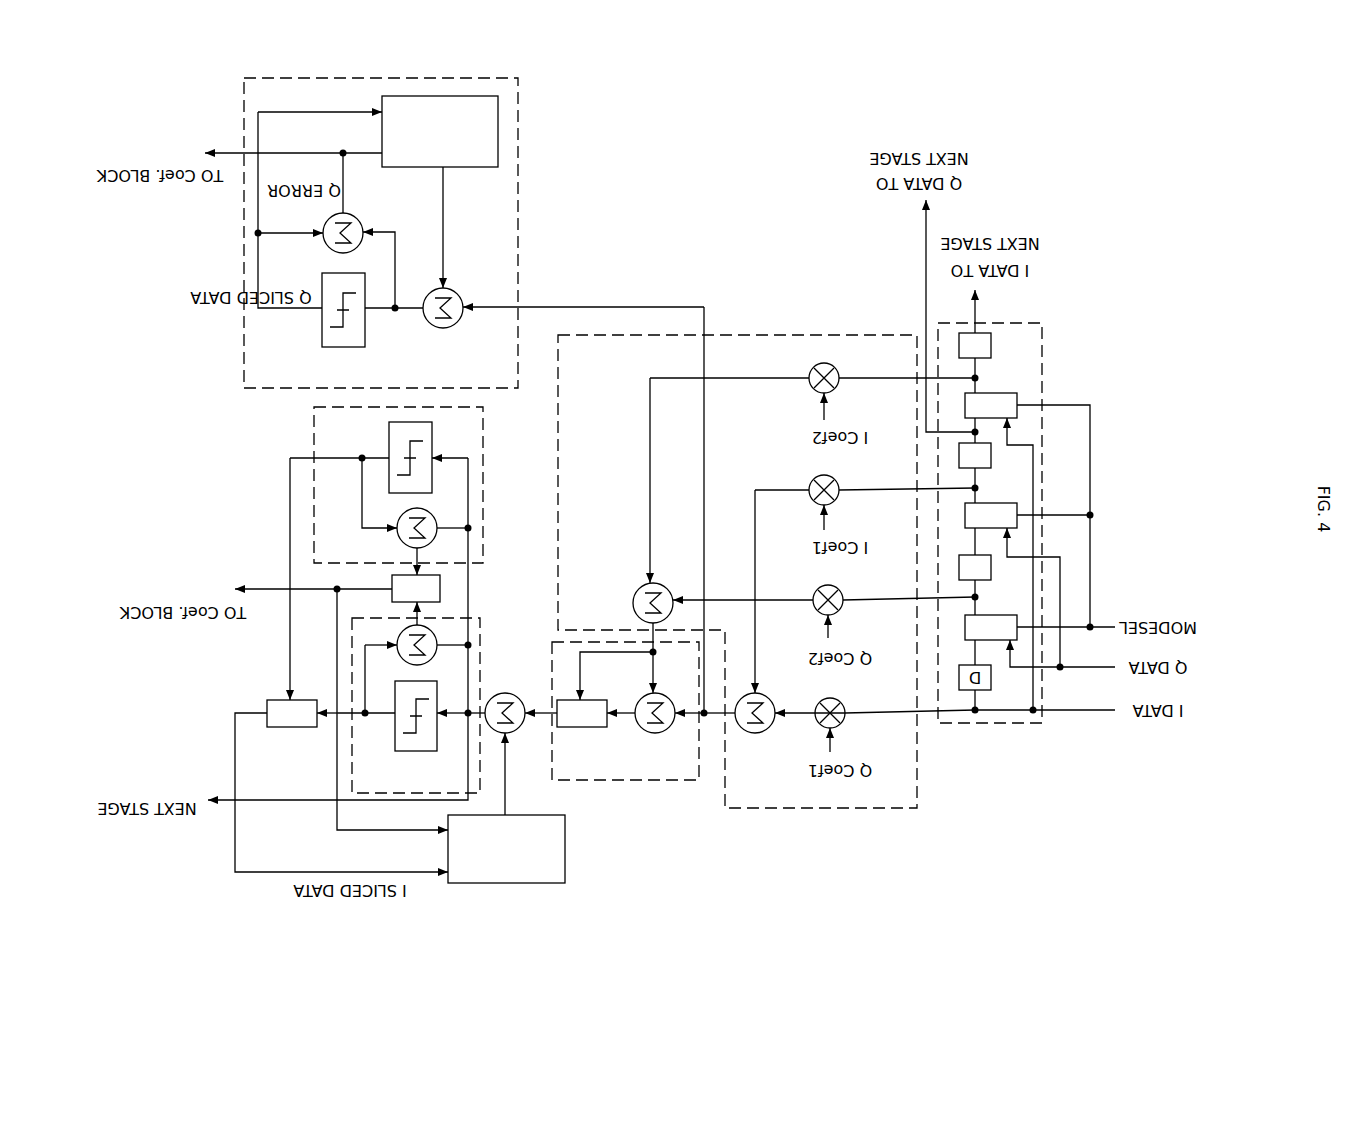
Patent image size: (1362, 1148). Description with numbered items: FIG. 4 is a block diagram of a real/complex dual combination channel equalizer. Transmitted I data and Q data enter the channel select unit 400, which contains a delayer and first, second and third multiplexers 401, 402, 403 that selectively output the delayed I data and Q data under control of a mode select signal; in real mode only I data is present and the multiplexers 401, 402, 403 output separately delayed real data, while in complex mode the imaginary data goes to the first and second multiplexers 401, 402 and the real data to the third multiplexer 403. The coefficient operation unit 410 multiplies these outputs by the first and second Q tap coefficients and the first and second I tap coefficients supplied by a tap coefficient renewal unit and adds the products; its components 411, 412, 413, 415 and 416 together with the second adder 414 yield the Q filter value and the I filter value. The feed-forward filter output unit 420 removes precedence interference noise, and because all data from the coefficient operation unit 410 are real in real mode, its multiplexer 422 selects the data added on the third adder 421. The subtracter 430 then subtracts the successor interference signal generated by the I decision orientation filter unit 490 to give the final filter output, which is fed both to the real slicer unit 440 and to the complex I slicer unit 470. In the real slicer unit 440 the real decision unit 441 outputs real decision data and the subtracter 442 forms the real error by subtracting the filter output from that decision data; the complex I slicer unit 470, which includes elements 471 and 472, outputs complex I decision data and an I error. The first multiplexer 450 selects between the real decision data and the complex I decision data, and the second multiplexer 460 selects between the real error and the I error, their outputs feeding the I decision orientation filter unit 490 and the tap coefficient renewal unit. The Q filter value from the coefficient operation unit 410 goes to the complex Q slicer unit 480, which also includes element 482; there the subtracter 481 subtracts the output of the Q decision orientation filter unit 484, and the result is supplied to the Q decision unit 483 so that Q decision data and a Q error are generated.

The channel select unit 400 is at (1042, 345).
The first multiplexer 401 is at (1010, 615).
The second multiplexer 402 is at (1008, 503).
The third multiplexer 403 is at (1008, 393).
The coefficient operation unit 410 is at (875, 808).
The first multiplier (Q Coef1) 411 is at (818, 702).
The first adder 412 is at (752, 733).
The second multiplier (Q Coef2) 413 is at (815, 590).
The second adder 414 is at (633, 603).
The third multiplier (I Coef1) 415 is at (811, 480).
The fourth multiplier (I Coef2) 416 is at (811, 368).
The feed-forward filter output unit 420 is at (640, 780).
The third adder 421 is at (655, 733).
The multiplexer 422 is at (582, 727).
The subtracter 430 is at (510, 692).
The real slicer unit 440 is at (480, 618).
The real decision unit 441 is at (410, 751).
The subtracter 442 is at (430, 662).
The first multiplexer 450 is at (292, 727).
The second multiplexer 460 is at (392, 600).
The complex I slicer unit 470 is at (314, 437).
The subtractor 471 is at (405, 545).
The slicer 472 is at (389, 440).
The complex Q slicer unit 480 is at (518, 230).
The subtracter 481 is at (455, 325).
The Q slicer 482 is at (322, 335).
The Q decision unit 483 is at (357, 218).
The Q decision orientation filter unit 484 is at (468, 167).
The I decision orientation filter unit 490 is at (505, 883).